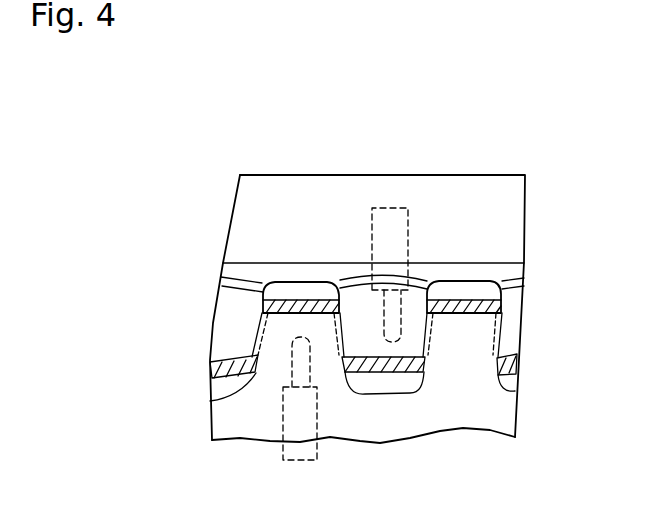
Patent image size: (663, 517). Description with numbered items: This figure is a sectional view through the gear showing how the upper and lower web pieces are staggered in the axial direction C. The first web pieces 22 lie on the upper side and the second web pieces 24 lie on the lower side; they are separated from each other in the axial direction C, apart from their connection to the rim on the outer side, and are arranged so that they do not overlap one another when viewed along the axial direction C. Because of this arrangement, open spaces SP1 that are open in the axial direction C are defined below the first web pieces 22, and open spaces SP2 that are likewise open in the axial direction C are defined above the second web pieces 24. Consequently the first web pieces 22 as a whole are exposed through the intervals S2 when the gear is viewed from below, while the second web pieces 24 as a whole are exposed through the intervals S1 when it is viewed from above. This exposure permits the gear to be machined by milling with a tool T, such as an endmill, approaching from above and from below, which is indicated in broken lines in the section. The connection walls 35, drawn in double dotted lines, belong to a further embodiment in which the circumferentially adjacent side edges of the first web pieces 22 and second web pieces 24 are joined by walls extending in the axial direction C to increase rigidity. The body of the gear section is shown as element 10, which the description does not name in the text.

The semiconductor substrate 10 is at (517, 238).
The first web pieces 22 is at (290, 283).
The second web pieces 24 is at (218, 385).
The connection walls 35 is at (502, 325).
The open spaces SP1 is at (270, 378).
The open spaces SP2 is at (363, 310).
The tool T is at (408, 227).
The axial direction C is at (387, 80).
The intervals S1 is at (427, 470).
The intervals S2 is at (497, 313).